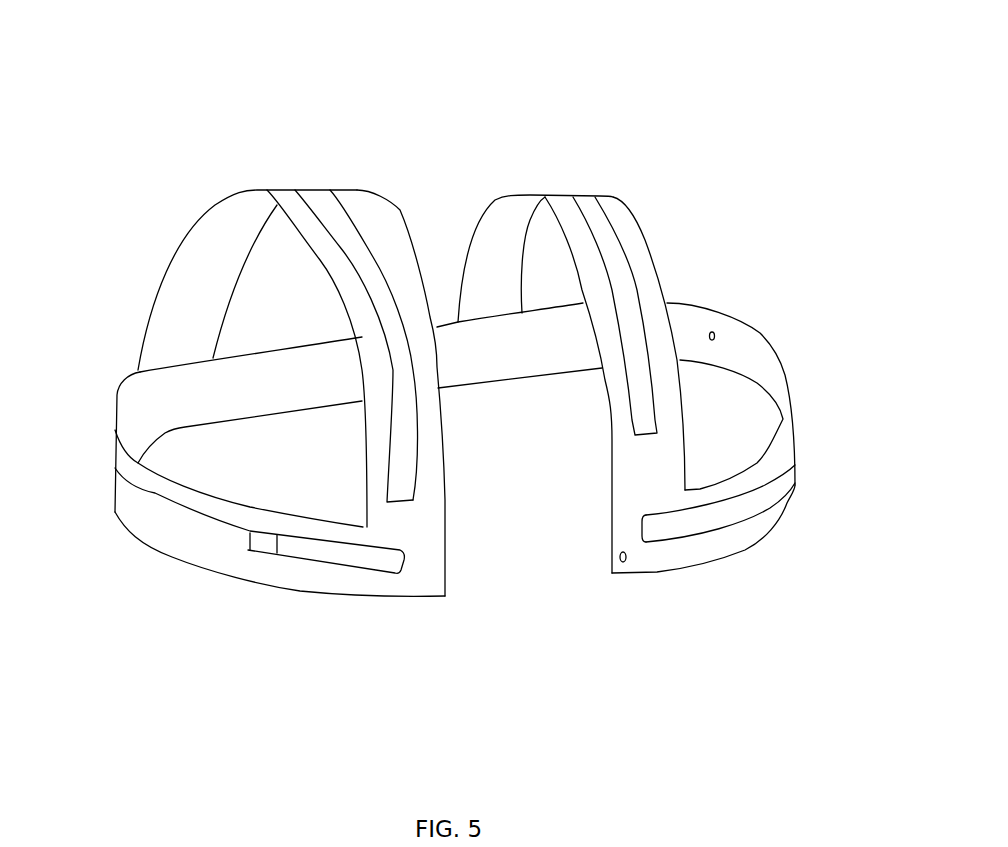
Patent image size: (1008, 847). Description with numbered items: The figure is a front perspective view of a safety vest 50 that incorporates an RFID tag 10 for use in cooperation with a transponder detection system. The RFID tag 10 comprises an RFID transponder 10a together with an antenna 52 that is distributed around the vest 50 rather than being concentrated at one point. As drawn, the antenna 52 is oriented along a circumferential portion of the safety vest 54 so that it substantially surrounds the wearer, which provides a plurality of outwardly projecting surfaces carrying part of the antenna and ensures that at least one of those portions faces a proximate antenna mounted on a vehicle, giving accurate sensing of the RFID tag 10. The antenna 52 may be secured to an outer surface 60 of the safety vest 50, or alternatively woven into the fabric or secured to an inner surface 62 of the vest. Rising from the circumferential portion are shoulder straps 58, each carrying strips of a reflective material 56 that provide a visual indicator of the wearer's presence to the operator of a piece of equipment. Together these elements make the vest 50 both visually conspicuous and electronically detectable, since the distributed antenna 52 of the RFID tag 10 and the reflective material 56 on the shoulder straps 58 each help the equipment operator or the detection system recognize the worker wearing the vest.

The safety vest 50 is at (743, 93).
The circumferential portion of the safety vest 54 is at (770, 337).
The antenna 52 is at (130, 492).
The RFID transponder 10a is at (263, 548).
The RFID tag 10 is at (320, 608).
The reflective material 56 is at (313, 188).
The shoulder straps 58 is at (381, 205).
The outer surface 60 is at (627, 561).
The inner surface 62 is at (713, 332).